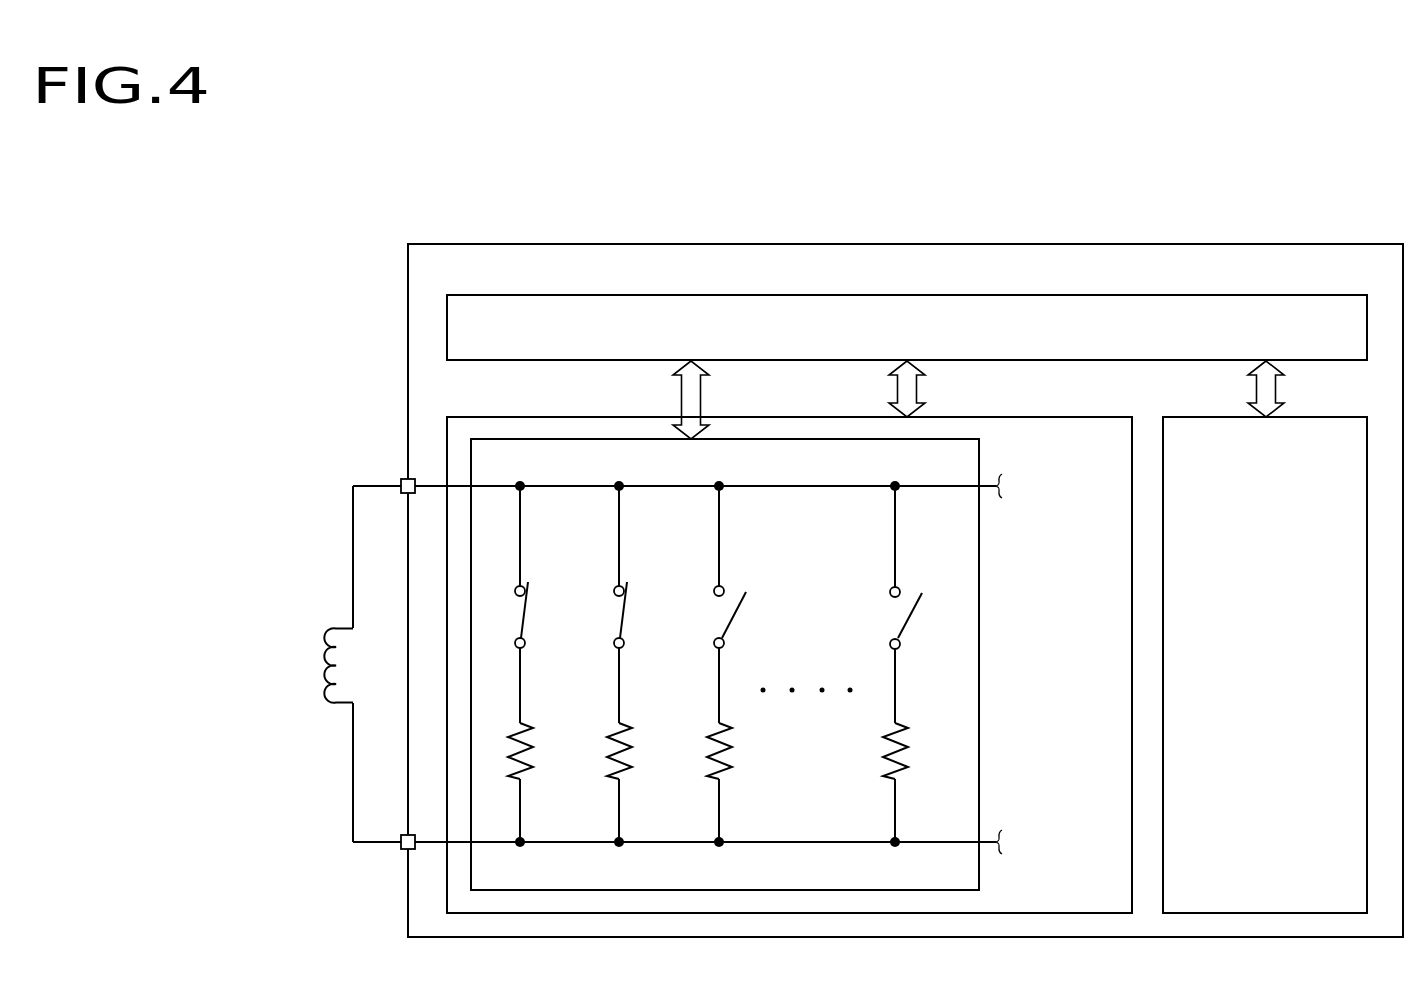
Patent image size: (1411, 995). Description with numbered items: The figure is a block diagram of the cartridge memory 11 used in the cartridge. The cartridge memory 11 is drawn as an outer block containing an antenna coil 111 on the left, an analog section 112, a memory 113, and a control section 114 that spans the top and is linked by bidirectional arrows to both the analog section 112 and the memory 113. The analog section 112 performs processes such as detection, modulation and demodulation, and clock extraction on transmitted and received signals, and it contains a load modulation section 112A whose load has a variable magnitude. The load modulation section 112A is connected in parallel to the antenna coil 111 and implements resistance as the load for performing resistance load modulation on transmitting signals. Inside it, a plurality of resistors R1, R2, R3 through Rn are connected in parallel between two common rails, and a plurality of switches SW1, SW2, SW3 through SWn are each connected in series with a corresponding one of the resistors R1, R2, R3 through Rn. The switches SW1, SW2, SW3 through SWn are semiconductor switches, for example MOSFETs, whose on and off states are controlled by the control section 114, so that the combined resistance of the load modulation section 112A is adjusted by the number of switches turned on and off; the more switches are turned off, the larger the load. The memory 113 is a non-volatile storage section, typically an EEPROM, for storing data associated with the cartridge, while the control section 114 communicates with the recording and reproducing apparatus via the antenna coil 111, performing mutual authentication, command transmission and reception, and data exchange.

The cartridge memory 11 is at (1142, 165).
The antenna coil 111 is at (320, 670).
The analog section 112 is at (1032, 415).
The load modulation section 112A is at (980, 455).
The memory 113 is at (1312, 415).
The control section 114 is at (1150, 293).
The switch SW1 is at (523, 617).
The switch SW2 is at (622, 617).
The switch SW3 is at (735, 617).
The switch SWn is at (908, 618).
The resistor R1 is at (530, 743).
The resistor R2 is at (629, 743).
The resistor R3 is at (729, 743).
The resistor Rn is at (905, 743).